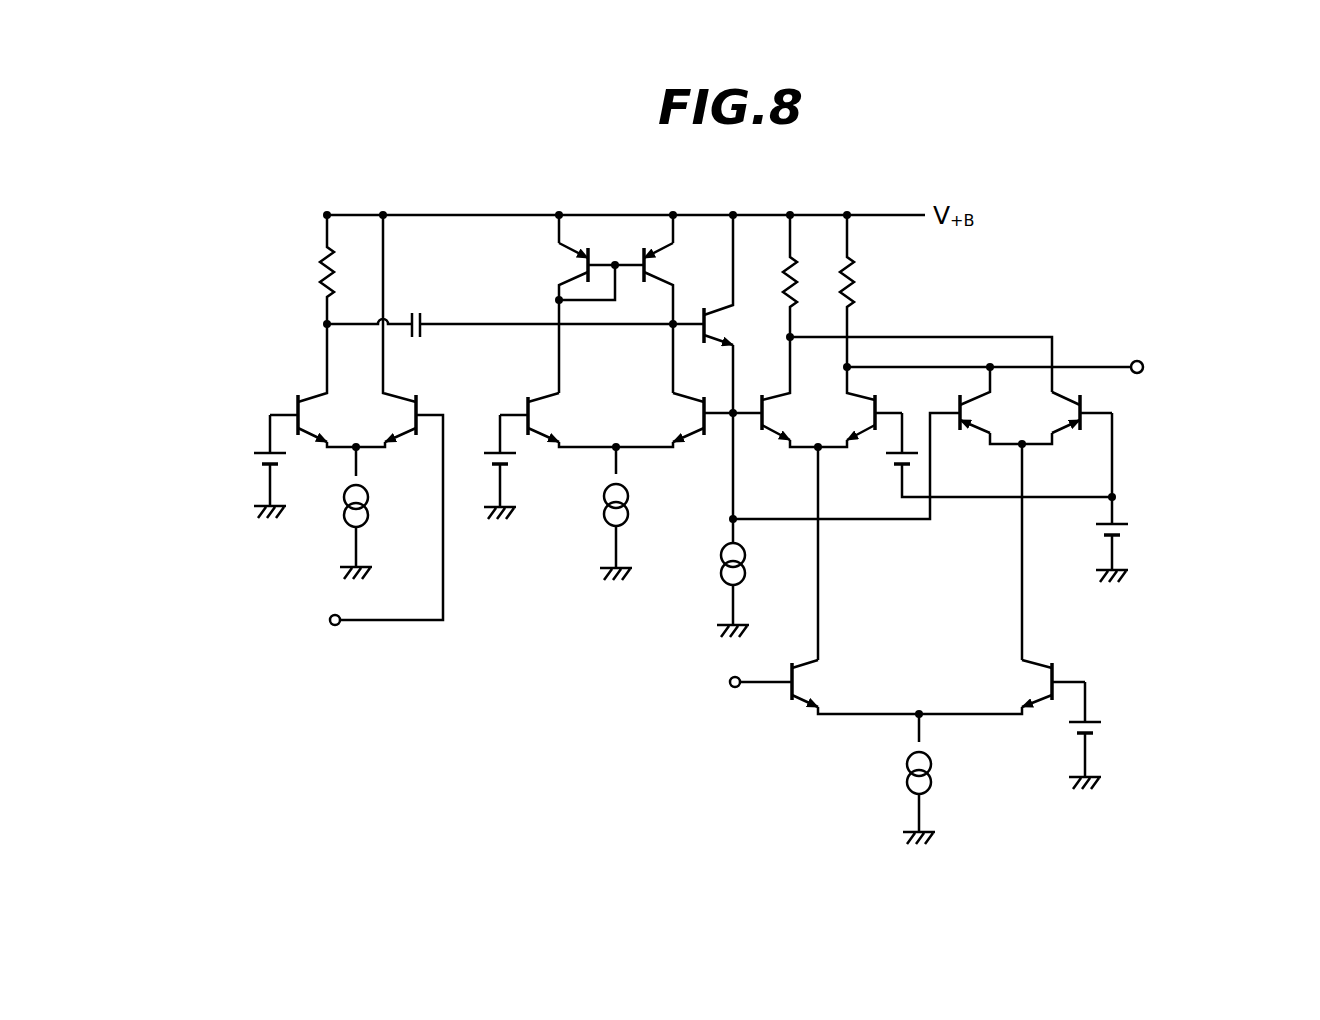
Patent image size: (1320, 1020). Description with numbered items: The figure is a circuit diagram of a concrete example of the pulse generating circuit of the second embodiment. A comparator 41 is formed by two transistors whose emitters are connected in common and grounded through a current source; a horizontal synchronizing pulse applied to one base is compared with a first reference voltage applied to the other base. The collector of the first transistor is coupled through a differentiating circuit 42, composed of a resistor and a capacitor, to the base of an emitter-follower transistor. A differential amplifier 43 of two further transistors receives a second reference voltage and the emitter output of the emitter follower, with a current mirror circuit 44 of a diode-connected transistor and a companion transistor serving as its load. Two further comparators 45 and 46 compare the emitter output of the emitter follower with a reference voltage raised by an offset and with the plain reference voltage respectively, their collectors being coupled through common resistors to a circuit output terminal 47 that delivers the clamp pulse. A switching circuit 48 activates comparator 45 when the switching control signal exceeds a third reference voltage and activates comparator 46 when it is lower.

The comparator 41 is at (277, 373).
The differentiating circuit 42 is at (300, 260).
The differential amplifier 43 is at (573, 493).
The current mirror circuit 44 is at (552, 235).
The comparator 45 is at (905, 325).
The comparator 46 is at (1036, 327).
The circuit output terminal 47 is at (1137, 360).
The switching circuit 48 is at (1100, 668).